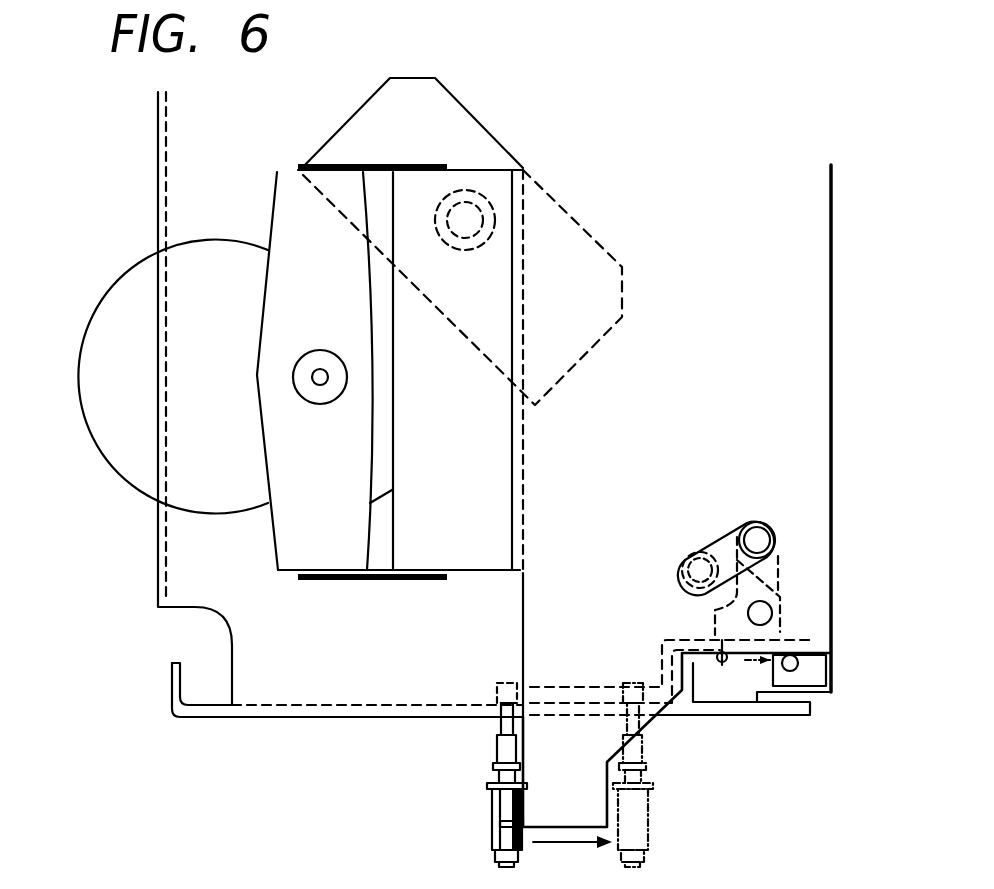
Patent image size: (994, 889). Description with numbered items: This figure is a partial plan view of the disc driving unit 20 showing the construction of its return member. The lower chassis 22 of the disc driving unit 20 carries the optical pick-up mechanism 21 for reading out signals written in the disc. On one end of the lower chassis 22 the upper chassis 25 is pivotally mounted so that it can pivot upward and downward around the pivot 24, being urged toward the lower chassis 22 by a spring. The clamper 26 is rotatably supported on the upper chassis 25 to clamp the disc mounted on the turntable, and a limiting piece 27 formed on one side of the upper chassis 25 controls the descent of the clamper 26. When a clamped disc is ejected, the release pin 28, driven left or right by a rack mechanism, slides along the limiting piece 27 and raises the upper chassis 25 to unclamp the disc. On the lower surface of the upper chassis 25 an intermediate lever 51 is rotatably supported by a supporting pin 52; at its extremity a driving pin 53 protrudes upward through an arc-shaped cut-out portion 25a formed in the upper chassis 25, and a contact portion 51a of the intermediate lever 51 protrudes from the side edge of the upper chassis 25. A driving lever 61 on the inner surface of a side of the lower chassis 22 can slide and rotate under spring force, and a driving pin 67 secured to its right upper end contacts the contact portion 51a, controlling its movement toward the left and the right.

The disc driving unit 20 is at (128, 500).
The optical pick-up mechanism 21 is at (457, 122).
The lower chassis 22 is at (317, 698).
The pivot 24 is at (790, 716).
The upper chassis 25 is at (520, 575).
The arc-shaped cut-out portion 25a is at (722, 532).
The clamper 26 is at (203, 333).
The limiting piece 27 is at (560, 829).
The release pin 28 is at (488, 833).
The intermediate lever 51 is at (782, 592).
The contact portion 51a is at (724, 662).
The supporting pin 52 is at (748, 613).
The driving pin 53 is at (771, 538).
The driving lever 61 is at (813, 634).
The driving pin 67 is at (830, 660).